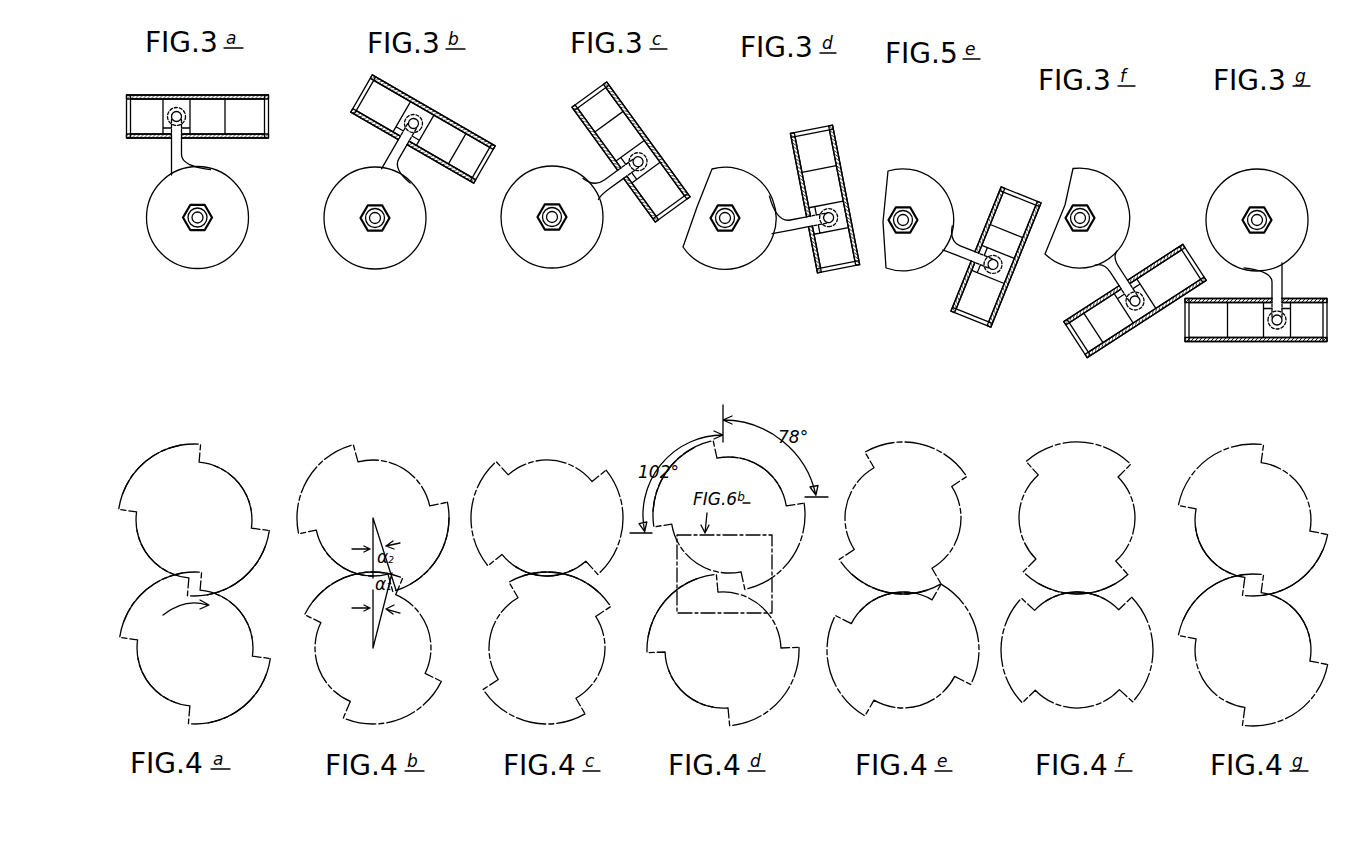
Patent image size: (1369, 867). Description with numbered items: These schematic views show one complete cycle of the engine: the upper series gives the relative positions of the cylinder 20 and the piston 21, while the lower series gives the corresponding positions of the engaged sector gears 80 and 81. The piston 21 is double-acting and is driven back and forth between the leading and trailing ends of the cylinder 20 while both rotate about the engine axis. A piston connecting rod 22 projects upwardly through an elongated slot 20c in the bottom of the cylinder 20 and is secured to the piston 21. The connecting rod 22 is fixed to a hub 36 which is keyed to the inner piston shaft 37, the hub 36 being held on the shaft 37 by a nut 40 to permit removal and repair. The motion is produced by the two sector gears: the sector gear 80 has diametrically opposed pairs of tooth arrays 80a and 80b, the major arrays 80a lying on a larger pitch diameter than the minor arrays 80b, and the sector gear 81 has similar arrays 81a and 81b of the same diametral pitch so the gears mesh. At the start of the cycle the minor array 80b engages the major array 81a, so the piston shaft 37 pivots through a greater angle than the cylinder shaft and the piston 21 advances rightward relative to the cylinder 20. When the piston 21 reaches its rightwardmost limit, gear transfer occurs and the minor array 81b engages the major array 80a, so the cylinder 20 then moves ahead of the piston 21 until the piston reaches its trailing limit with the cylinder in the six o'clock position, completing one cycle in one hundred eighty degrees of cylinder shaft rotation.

In FIG. 3A, the cylinder 20 is at (250, 97).
In FIG. 3B, the cylinder 20 is at (477, 132).
In FIG. 3C, the cylinder 20 is at (613, 104).
In FIG. 3D, the cylinder 20 is at (838, 133).
In FIG. 3E, the cylinder 20 is at (1003, 190).
In FIG. 3F, the cylinder 20 is at (1161, 255).
In FIG. 3G, the cylinder 20 is at (1212, 343).
In FIG. 3A, the elongated slot 20c is at (245, 155).
In FIG. 3A, the piston 21 is at (200, 108).
In FIG. 3B, the piston 21 is at (436, 124).
In FIG. 3C, the piston 21 is at (625, 133).
In FIG. 3D, the piston 21 is at (833, 183).
In FIG. 3E, the piston 21 is at (991, 301).
In FIG. 3F, the piston 21 is at (1115, 318).
In FIG. 3G, the piston 21 is at (1308, 320).
In FIG. 3A, the piston connecting rod 22 is at (174, 152).
In FIG. 3B, the piston connecting rod 22 is at (403, 152).
In FIG. 3C, the piston connecting rod 22 is at (612, 186).
In FIG. 3D, the piston connecting rod 22 is at (795, 230).
In FIG. 3E, the piston connecting rod 22 is at (950, 256).
In FIG. 3F, the piston connecting rod 22 is at (1122, 268).
In FIG. 3G, the piston connecting rod 22 is at (1279, 284).
In FIG. 3A, the hub 36 is at (152, 207).
In FIG. 3B, the hub 36 is at (340, 190).
In FIG. 3C, the hub 36 is at (551, 169).
In FIG. 3D, the hub 36 is at (737, 171).
In FIG. 3E, the hub 36 is at (921, 175).
In FIG. 3F, the hub 36 is at (1110, 178).
In FIG. 3G, the hub 36 is at (1303, 204).
In FIG. 3A, the inner piston shaft 37 is at (206, 208).
In FIG. 3B, the inner piston shaft 37 is at (391, 216).
In FIG. 3C, the inner piston shaft 37 is at (552, 205).
In FIG. 3D, the inner piston shaft 37 is at (734, 212).
In FIG. 3E, the inner piston shaft 37 is at (916, 216).
In FIG. 3F, the inner piston shaft 37 is at (1095, 217).
In FIG. 3G, the inner piston shaft 37 is at (1265, 218).
In FIG. 3A, the nut 40 is at (186, 226).
In FIG. 3B, the nut 40 is at (366, 227).
In FIG. 3C, the nut 40 is at (541, 233).
In FIG. 3D, the nut 40 is at (722, 234).
In FIG. 3E, the nut 40 is at (902, 248).
In FIG. 3F, the nut 40 is at (1082, 234).
In FIG. 3G, the nut 40 is at (1253, 210).
In FIG. 4A, the sector gear 80 is at (215, 506).
In FIG. 4B, the sector gear 80 is at (380, 508).
In FIG. 4C, the sector gear 80 is at (554, 511).
In FIG. 4D, the sector gear 80 is at (755, 488).
In FIG. 4E, the sector gear 80 is at (917, 508).
In FIG. 4F, the sector gear 80 is at (1087, 508).
In FIG. 4G, the sector gear 80 is at (1267, 508).
In FIG. 4A, the major diameter tooth array 80a is at (150, 453).
In FIG. 4B, the major diameter tooth array 80a is at (449, 582).
In FIG. 4D, the major diameter tooth array 80a is at (680, 592).
In FIG. 4E, the major diameter tooth array 80a is at (852, 577).
In FIG. 4F, the major diameter tooth array 80a is at (1148, 600).
In FIG. 4G, the major diameter tooth array 80a is at (1329, 590).
In FIG. 4A, the minor diameter tooth array 80b is at (237, 482).
In FIG. 4B, the minor diameter tooth array 80b is at (333, 562).
In FIG. 4C, the minor diameter tooth array 80b is at (511, 565).
In FIG. 4D, the minor diameter tooth array 80b is at (801, 552).
In FIG. 4G, the minor diameter tooth array 80b is at (1208, 557).
In FIG. 4A, the sector gear 81 is at (215, 643).
In FIG. 4B, the sector gear 81 is at (382, 681).
In FIG. 4C, the sector gear 81 is at (557, 651).
In FIG. 4D, the sector gear 81 is at (732, 658).
In FIG. 4E, the sector gear 81 is at (914, 655).
In FIG. 4F, the sector gear 81 is at (1090, 655).
In FIG. 4G, the sector gear 81 is at (1262, 655).
In FIG. 4A, the major diameter tooth array 81a is at (133, 603).
In FIG. 4B, the major diameter tooth array 81a is at (320, 597).
In FIG. 4C, the major diameter tooth array 81a is at (614, 579).
In FIG. 4D, the major diameter tooth array 81a is at (745, 575).
In FIG. 4G, the major diameter tooth array 81a is at (1200, 606).
In FIG. 4A, the minor diameter tooth array 81b is at (284, 637).
In FIG. 4D, the minor diameter tooth array 81b is at (662, 648).
In FIG. 4E, the minor diameter tooth array 81b is at (935, 610).
In FIG. 4F, the minor diameter tooth array 81b is at (1035, 617).
In FIG. 4G, the minor diameter tooth array 81b is at (1338, 624).